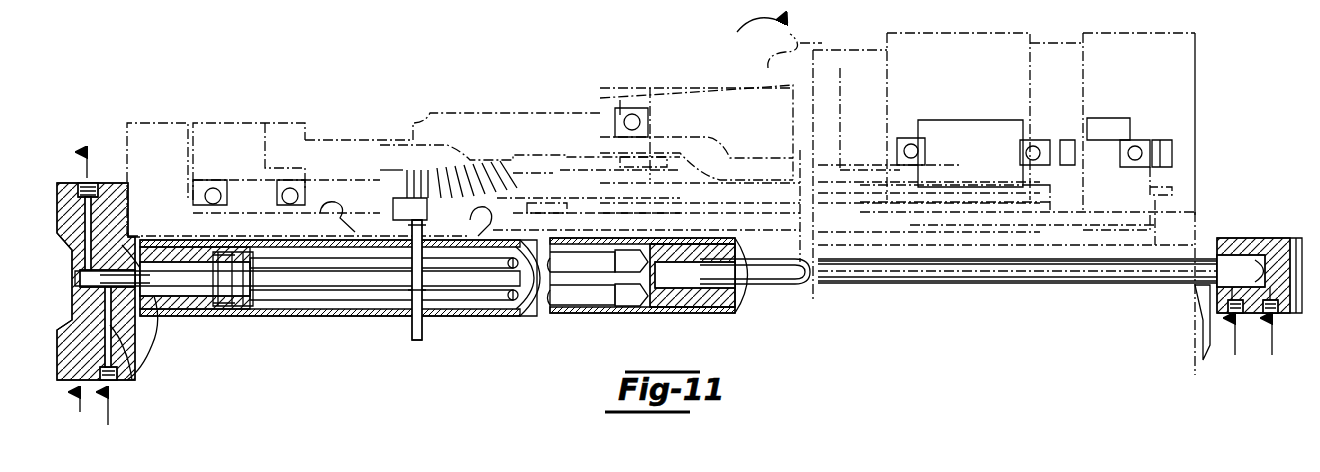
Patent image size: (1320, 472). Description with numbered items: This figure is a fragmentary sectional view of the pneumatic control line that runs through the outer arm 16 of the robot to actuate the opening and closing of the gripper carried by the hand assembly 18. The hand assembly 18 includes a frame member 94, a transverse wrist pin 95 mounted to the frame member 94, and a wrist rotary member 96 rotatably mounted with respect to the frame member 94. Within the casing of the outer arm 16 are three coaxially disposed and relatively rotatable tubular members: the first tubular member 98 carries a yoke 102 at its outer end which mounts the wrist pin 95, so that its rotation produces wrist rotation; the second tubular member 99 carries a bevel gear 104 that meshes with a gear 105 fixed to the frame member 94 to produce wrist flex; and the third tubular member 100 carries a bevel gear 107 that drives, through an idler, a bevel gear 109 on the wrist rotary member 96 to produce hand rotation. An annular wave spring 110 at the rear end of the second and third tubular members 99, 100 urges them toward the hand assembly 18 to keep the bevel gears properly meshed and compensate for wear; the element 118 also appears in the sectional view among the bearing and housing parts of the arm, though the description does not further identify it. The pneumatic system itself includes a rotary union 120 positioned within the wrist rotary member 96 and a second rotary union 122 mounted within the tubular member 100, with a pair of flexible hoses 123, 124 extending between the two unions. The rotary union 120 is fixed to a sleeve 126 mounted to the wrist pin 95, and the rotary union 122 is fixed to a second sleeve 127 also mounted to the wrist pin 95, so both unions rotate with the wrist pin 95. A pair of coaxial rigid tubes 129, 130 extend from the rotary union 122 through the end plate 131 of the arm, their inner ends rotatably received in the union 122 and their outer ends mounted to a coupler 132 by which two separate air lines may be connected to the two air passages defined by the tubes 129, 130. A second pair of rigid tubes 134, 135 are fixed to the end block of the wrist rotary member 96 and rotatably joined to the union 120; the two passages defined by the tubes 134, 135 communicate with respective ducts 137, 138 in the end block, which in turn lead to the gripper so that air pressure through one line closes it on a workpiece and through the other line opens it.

The outer arm 16 is at (763, 43).
The hand assembly 18 is at (82, 412).
The frame member 94 is at (297, 122).
The transverse wrist pin 95 is at (418, 342).
The wrist rotary member 96 is at (148, 118).
The first tubular member 98 is at (875, 155).
The second tubular member 99 is at (847, 216).
The third tubular member 100 is at (916, 226).
The yoke 102 is at (428, 125).
The bevel gear 104 is at (556, 165).
The gear 105 is at (428, 163).
The bevel gear 107 is at (487, 212).
The bevel gear 109 is at (323, 214).
The annular wave spring 110 is at (1074, 138).
The bearing block 118 is at (940, 138).
The rotary union 120 is at (212, 318).
The second rotary union 122 is at (674, 312).
The flexible hose 123 is at (308, 300).
The flexible hose 124 is at (365, 300).
The sleeve 126 is at (284, 317).
The second sleeve 127 is at (569, 320).
The coaxial rigid tube 129 is at (1050, 288).
The coaxial rigid tube 130 is at (1076, 293).
The end plate 131 is at (1168, 198).
The coupler 132 is at (1256, 240).
The rigid tube 134 is at (128, 230).
The rigid tube 135 is at (160, 348).
The duct 137 is at (100, 350).
The duct 138 is at (60, 212).